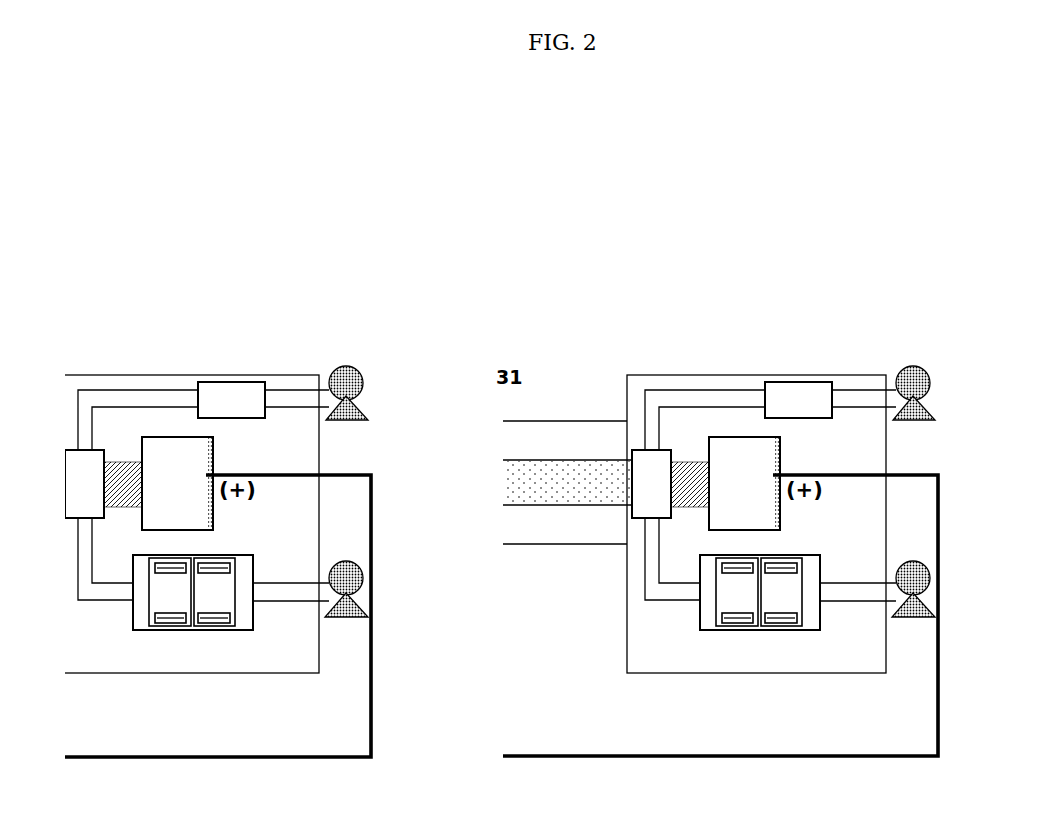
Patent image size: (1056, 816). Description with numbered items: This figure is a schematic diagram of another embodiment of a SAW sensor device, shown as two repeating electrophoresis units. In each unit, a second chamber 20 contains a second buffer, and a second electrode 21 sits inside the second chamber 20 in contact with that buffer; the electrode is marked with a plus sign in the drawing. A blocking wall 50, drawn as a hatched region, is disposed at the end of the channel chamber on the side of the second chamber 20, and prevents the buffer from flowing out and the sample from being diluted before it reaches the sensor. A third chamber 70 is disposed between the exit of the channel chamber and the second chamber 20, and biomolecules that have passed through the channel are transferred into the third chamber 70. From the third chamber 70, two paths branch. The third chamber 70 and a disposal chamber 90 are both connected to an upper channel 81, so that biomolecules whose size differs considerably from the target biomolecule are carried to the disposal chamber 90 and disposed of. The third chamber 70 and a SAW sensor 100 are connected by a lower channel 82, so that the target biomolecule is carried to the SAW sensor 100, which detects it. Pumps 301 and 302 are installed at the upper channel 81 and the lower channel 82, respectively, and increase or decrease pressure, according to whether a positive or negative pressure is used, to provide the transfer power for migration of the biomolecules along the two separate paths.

The second chamber 20 is at (738, 437).
The second electrode 21 is at (782, 452).
The blocking wall 50 is at (691, 462).
The third chamber 70 is at (637, 450).
The upper channel 81 is at (862, 390).
The lower channel 82 is at (670, 603).
The disposal chamber 90 is at (791, 382).
The SAW sensor 100 is at (738, 625).
The pump 301 is at (932, 384).
The pump 302 is at (928, 573).